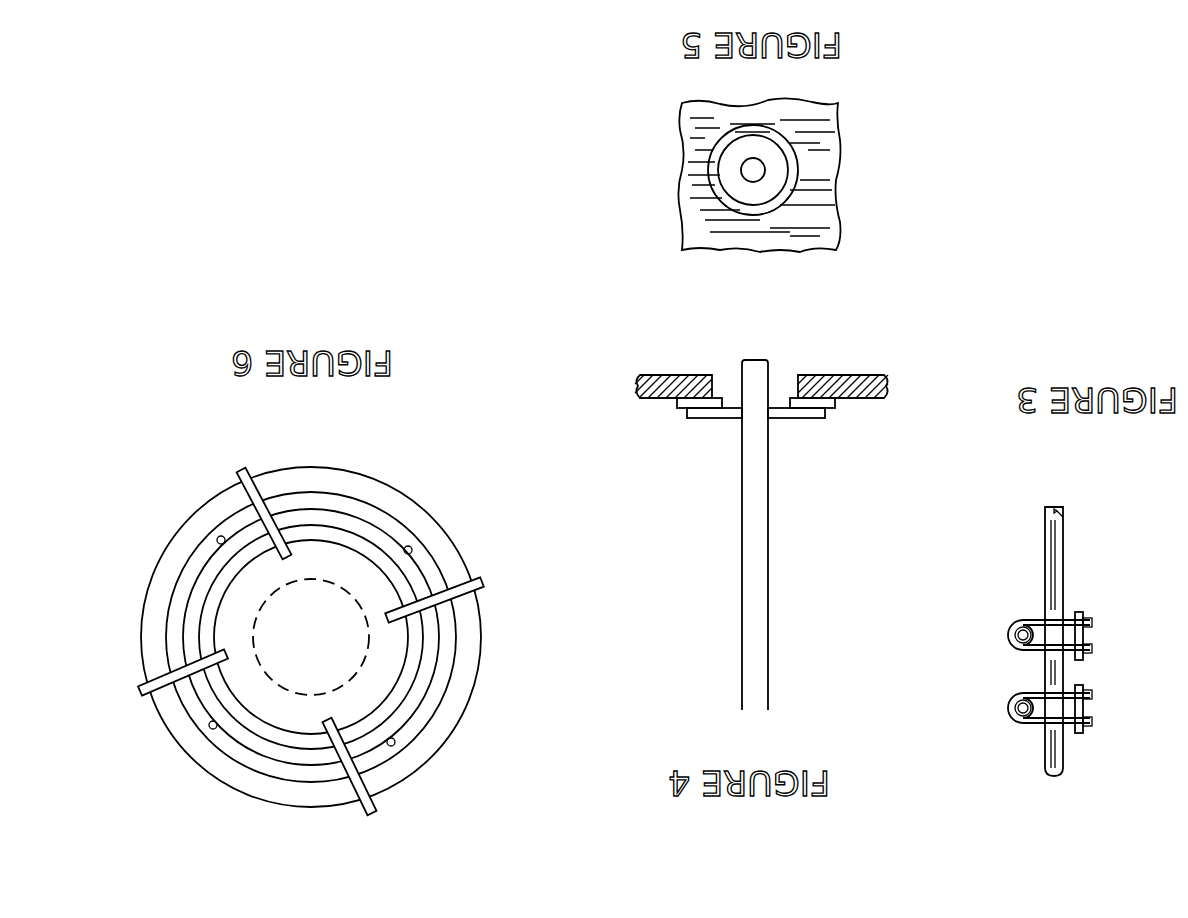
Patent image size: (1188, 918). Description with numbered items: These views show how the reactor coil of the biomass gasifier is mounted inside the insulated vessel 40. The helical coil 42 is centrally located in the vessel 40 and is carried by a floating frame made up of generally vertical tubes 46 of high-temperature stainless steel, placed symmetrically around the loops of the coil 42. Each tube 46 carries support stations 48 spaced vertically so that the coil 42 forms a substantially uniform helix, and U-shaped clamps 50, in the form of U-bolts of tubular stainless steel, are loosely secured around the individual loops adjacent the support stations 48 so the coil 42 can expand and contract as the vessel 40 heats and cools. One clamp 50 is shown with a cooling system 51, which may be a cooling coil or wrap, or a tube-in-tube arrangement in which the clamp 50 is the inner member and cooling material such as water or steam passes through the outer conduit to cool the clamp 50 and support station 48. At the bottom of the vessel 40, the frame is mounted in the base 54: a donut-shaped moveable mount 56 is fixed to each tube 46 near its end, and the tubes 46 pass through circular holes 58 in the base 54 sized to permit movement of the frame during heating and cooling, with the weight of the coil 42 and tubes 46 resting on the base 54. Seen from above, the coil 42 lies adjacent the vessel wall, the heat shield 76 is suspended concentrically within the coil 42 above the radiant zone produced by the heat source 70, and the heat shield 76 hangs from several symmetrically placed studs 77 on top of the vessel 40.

In FIG. 6, the insulated vessel 40 is at (157, 648).
In FIG. 6, the helical coil 42 is at (427, 683).
In FIG. 3, the helical coil 42 is at (1008, 633).
In FIG. 6, the vertical tubes 46 is at (217, 540).
In FIG. 4, the vertical tubes 46 is at (742, 565).
In FIG. 5, the vertical tubes 46 is at (757, 172).
In FIG. 3, the vertical tubes 46 is at (1045, 562).
In FIG. 3, the support stations 48 is at (1023, 687).
In FIG. 3, the clamps 50 is at (1020, 655).
In FIG. 3, the cooling system 51 is at (1003, 726).
In FIG. 4, the base 54 is at (675, 374).
In FIG. 5, the base 54 is at (693, 237).
In FIG. 4, the moveable mount 56 is at (718, 418).
In FIG. 5, the moveable mount 56 is at (720, 158).
In FIG. 4, the holes 58 is at (790, 403).
In FIG. 6, the heat source 70 is at (253, 618).
In FIG. 6, the heat shield 76 is at (227, 680).
In FIG. 6, the studs 77 is at (143, 687).